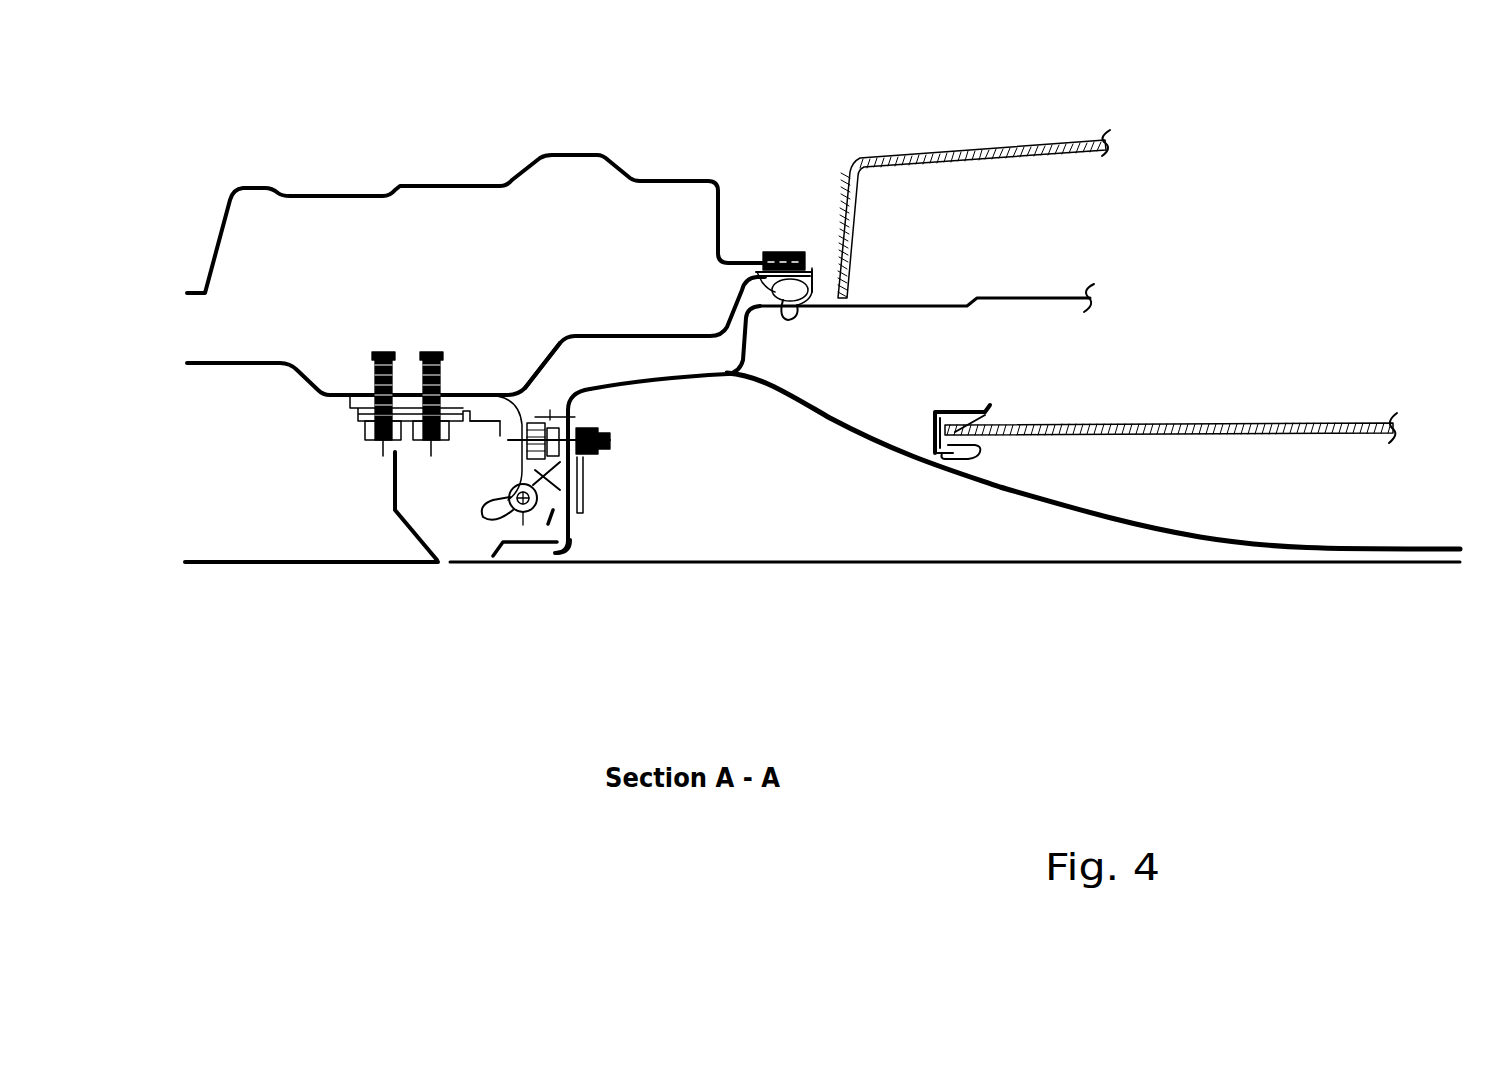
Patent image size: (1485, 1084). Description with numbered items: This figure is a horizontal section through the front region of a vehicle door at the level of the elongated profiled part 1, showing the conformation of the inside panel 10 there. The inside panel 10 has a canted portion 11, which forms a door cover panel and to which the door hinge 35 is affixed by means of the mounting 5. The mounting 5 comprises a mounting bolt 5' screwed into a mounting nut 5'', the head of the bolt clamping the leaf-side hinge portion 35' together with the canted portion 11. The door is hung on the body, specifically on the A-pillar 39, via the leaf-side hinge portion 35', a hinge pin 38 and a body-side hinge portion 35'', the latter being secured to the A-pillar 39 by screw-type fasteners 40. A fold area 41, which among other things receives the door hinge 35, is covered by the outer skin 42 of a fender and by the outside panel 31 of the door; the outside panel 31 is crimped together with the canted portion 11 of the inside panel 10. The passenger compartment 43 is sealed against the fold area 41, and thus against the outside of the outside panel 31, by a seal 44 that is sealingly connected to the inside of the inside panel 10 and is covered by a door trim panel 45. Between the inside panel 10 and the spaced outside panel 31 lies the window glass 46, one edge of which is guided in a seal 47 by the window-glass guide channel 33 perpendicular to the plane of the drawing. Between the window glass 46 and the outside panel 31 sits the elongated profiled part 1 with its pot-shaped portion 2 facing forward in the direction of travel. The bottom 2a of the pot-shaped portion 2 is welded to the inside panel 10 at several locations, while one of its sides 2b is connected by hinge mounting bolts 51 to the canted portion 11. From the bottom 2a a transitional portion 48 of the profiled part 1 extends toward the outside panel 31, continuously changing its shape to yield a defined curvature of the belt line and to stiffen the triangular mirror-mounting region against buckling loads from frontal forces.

The elongated profiled part 1 is at (1283, 552).
The pot-shaped portion 2 is at (577, 382).
The bottom of pot-shaped portion 2a is at (648, 377).
The side of pot-shaped portion 2b is at (580, 527).
The mounting 5 is at (596, 471).
The mounting bolt 5' is at (486, 410).
The mounting nut 5'' is at (651, 421).
The inside panel 10 is at (928, 303).
The canted portion 11 is at (567, 397).
The outside panel 31 is at (988, 563).
The window-glass guide channel 33 is at (967, 410).
The door hinge 35 is at (521, 578).
The leaf-side hinge portion 35' is at (653, 599).
The body-side hinge portion 35'' is at (465, 458).
The hinge pin 38 is at (482, 558).
The A-pillar 39 is at (348, 190).
The screw-type fasteners 40 is at (437, 357).
The fold area 41 is at (465, 540).
The outer skin of fender 42 is at (287, 567).
The passenger compartment 43 is at (805, 130).
The seal 44 is at (817, 270).
The door trim panel 45 is at (987, 152).
The window glass 46 is at (1160, 433).
The seal 47 is at (973, 450).
The transitional portion 48 is at (898, 452).
The hinge mounting bolts 51 is at (588, 448).